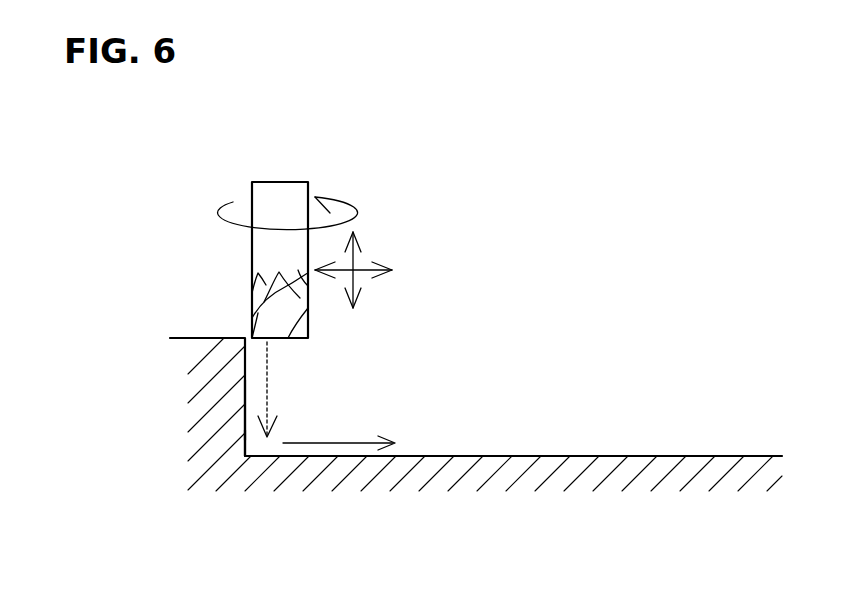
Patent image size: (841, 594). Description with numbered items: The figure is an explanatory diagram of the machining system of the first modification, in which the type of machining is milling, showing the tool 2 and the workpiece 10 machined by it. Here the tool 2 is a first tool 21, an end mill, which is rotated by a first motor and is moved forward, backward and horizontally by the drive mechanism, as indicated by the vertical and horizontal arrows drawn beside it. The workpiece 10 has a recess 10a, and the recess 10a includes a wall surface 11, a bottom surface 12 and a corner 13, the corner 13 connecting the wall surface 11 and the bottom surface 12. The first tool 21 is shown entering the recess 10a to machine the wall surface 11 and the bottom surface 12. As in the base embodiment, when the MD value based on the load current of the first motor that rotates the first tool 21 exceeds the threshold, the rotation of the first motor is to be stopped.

The tool 2 is at (249, 309).
The first tool 21 is at (250, 262).
The workpiece 10 is at (280, 500).
The recess 10a is at (497, 454).
The wall surface 11 is at (245, 390).
The bottom surface 12 is at (405, 457).
The corner 13 is at (250, 457).